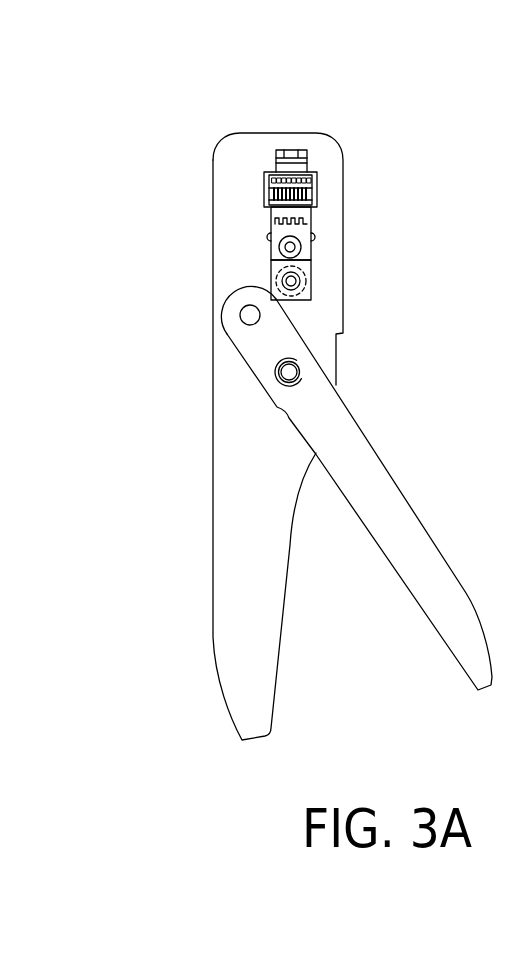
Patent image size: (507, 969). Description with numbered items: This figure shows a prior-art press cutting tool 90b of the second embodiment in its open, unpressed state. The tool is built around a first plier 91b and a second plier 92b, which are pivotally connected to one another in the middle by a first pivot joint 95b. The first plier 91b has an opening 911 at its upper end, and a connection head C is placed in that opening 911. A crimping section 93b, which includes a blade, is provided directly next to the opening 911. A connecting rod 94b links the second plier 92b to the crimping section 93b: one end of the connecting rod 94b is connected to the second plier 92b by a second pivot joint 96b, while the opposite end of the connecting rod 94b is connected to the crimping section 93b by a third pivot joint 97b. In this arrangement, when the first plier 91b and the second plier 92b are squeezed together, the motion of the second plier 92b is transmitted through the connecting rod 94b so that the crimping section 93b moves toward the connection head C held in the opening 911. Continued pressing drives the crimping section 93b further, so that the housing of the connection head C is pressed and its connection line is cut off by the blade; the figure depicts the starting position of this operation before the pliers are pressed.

The press cutting tool 90b is at (183, 123).
The opening 911 is at (305, 151).
The connection head C is at (268, 190).
The crimping section 93b is at (272, 232).
The third pivot joint 97b is at (284, 280).
The connecting rod 94b is at (272, 283).
The second pivot joint 96b is at (258, 315).
The first pivot joint 95b is at (295, 372).
The second plier 92b is at (378, 474).
The first plier 91b is at (213, 552).